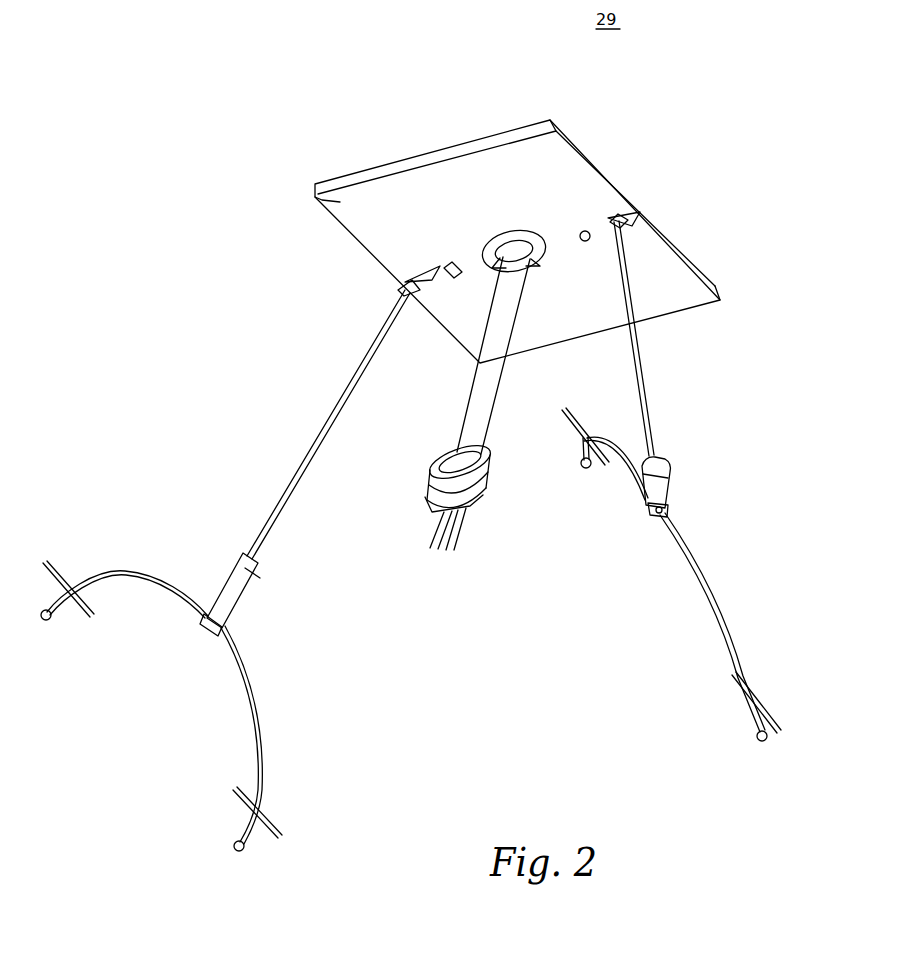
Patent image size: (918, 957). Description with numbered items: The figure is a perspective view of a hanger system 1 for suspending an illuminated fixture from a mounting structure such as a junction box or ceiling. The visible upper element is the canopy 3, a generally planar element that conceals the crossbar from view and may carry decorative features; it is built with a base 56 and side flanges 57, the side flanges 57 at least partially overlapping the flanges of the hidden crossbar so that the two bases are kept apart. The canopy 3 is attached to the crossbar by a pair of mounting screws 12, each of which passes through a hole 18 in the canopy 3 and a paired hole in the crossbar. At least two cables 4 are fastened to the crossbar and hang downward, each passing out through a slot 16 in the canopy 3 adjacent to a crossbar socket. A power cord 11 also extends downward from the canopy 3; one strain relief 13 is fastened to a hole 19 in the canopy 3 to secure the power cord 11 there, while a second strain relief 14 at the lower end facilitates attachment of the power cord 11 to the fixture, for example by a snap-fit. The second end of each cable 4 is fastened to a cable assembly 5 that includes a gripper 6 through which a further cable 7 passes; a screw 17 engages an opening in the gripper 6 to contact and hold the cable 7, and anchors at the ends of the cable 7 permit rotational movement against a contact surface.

The hanger system 1 is at (283, 136).
The canopy 3 is at (590, 160).
The cable 4 is at (340, 395).
The cable assembly 5 is at (190, 557).
The gripper 6 is at (245, 610).
The cable 7 is at (263, 732).
The power cord 11 is at (475, 385).
The mounting screw 12 is at (452, 266).
The strain relief 13 is at (533, 268).
The strain relief 14 is at (435, 468).
The slot 16 is at (400, 292).
The screw 17 is at (208, 634).
The hole 18 is at (438, 265).
The hole 19 is at (522, 240).
The base 56 is at (318, 198).
The side flange 57 is at (452, 148).